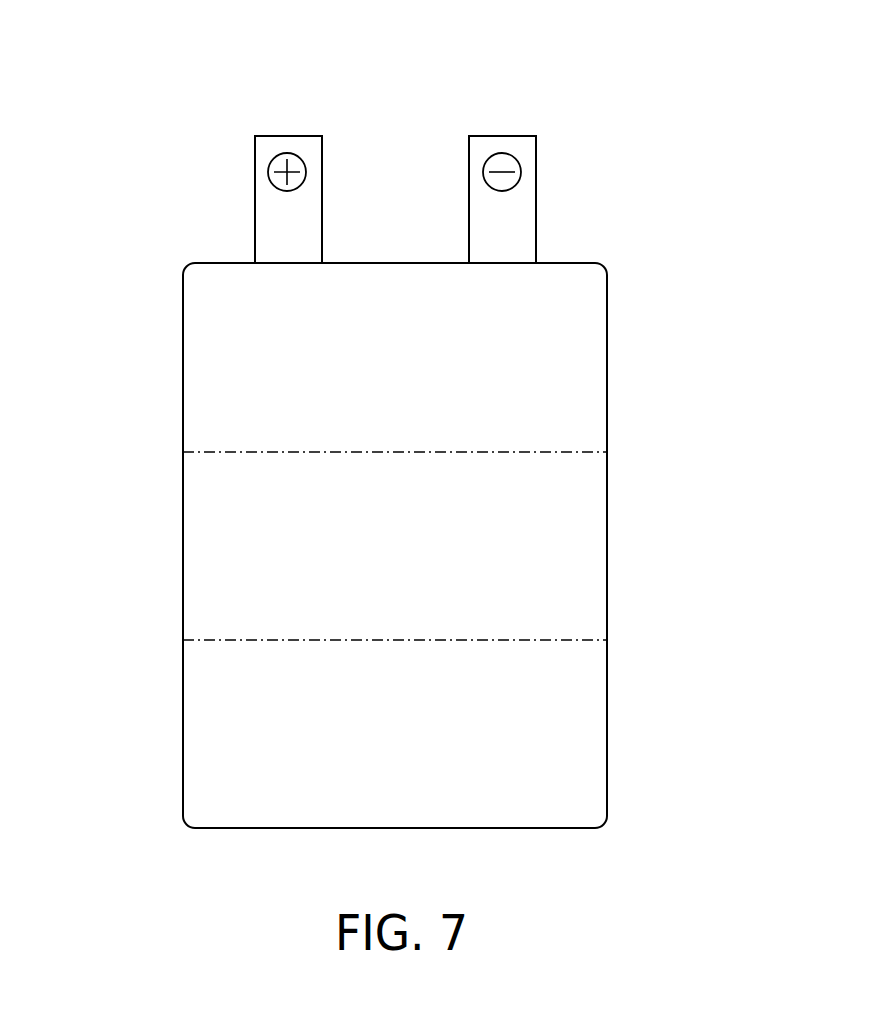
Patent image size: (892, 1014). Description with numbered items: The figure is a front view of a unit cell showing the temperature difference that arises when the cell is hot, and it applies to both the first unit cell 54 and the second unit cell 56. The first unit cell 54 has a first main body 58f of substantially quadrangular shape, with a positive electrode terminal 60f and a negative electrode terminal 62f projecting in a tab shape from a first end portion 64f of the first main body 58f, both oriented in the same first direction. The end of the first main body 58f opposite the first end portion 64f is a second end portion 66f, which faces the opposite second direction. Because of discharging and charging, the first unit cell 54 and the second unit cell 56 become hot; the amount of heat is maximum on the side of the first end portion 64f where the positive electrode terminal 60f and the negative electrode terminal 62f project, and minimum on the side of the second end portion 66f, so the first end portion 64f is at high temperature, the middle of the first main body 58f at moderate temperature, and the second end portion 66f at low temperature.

The first unit cell 54 is at (640, 81).
The second unit cell 56 is at (370, 486).
The positive electrode terminal 60f is at (254, 163).
The negative electrode terminal 62f is at (537, 163).
The first end portion 64f is at (206, 280).
The first main body 58f is at (207, 543).
The second end portion 66f is at (207, 817).